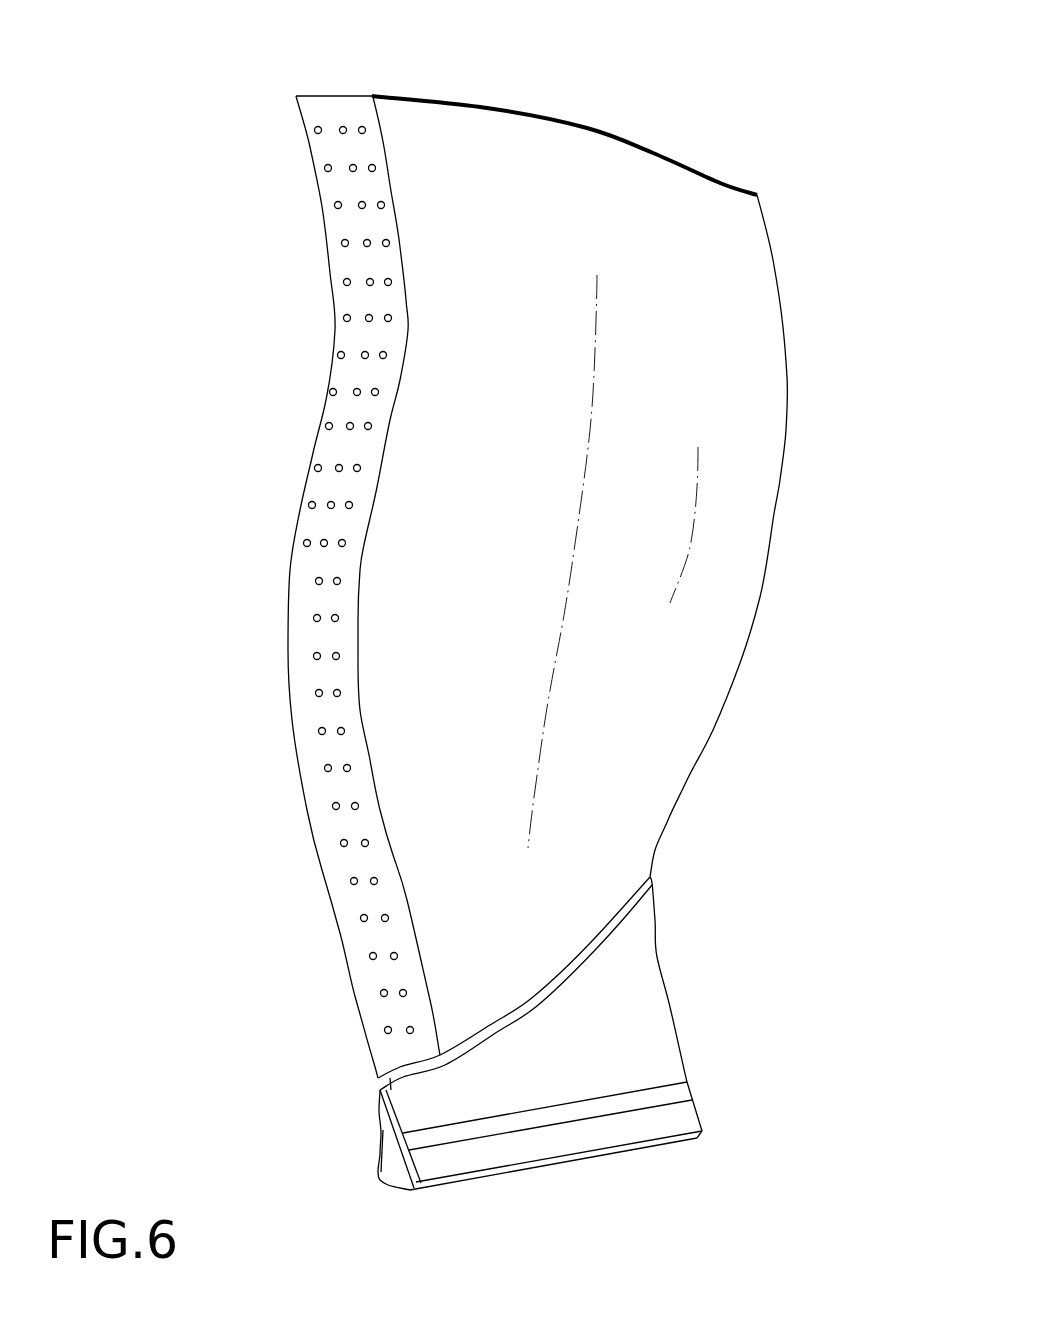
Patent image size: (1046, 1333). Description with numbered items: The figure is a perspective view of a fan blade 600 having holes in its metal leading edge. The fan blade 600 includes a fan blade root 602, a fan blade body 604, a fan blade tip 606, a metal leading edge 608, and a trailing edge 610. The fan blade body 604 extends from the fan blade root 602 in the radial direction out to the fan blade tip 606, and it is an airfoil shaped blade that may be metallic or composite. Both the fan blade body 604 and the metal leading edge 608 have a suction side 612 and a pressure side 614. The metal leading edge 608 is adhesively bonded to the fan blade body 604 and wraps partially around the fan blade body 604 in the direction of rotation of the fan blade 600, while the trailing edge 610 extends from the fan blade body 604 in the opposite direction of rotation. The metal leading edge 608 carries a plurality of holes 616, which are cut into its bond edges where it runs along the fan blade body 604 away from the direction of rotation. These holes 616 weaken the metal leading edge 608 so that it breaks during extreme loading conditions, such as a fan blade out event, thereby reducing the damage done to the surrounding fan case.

The fan blade 600 is at (713, 56).
The fan blade root 602 is at (638, 1148).
The fan blade body 604 is at (617, 622).
The fan blade tip 606 is at (535, 112).
The metal leading edge 608 is at (362, 275).
The trailing edge 610 is at (773, 520).
The suction side 612 is at (483, 405).
The pressure side 614 is at (335, 243).
The plurality of holes 616 is at (342, 243).